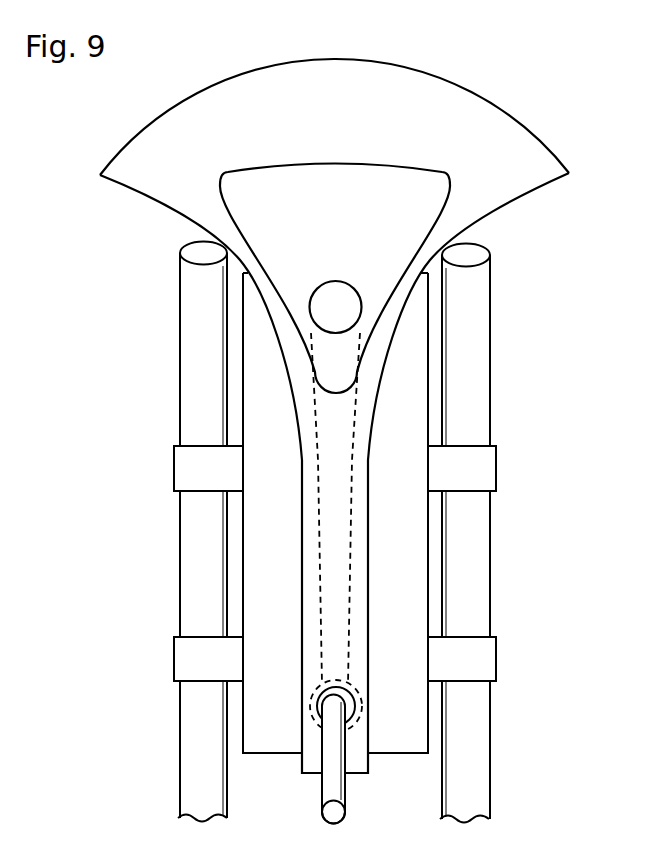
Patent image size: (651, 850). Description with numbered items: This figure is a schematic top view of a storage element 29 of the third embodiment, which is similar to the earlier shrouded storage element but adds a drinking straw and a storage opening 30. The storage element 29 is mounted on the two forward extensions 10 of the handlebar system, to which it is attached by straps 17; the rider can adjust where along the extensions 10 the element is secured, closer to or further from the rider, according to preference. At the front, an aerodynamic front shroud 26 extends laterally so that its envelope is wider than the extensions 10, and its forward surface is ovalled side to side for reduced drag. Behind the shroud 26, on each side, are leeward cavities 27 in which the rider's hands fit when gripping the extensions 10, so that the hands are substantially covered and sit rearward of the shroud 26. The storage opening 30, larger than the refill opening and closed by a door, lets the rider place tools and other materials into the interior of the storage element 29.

The extensions 10 is at (189, 553).
The straps 17 is at (185, 466).
The aerodynamic front shroud 26 is at (334, 389).
The leeward cavities 27 is at (163, 208).
The storage element 29 is at (458, 68).
The storage opening 30 is at (387, 203).